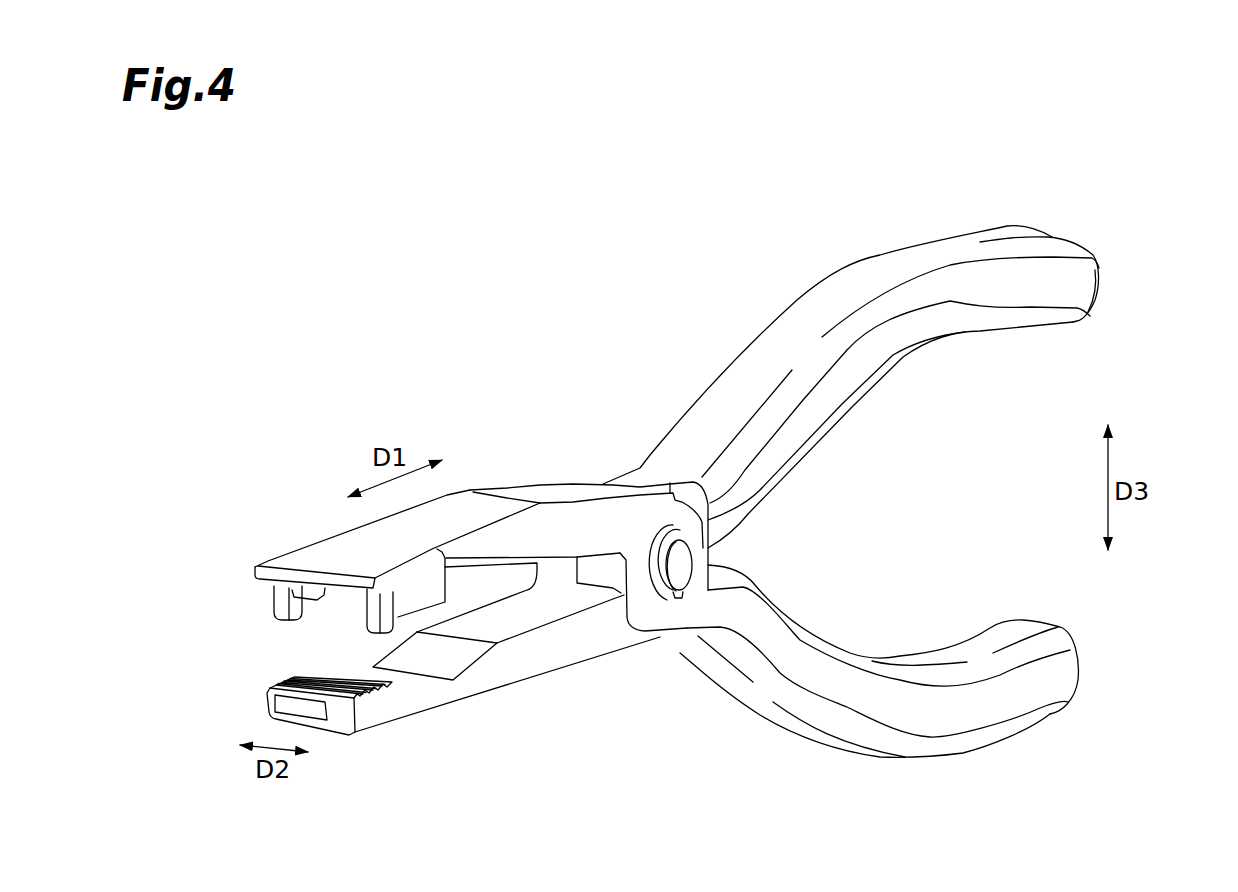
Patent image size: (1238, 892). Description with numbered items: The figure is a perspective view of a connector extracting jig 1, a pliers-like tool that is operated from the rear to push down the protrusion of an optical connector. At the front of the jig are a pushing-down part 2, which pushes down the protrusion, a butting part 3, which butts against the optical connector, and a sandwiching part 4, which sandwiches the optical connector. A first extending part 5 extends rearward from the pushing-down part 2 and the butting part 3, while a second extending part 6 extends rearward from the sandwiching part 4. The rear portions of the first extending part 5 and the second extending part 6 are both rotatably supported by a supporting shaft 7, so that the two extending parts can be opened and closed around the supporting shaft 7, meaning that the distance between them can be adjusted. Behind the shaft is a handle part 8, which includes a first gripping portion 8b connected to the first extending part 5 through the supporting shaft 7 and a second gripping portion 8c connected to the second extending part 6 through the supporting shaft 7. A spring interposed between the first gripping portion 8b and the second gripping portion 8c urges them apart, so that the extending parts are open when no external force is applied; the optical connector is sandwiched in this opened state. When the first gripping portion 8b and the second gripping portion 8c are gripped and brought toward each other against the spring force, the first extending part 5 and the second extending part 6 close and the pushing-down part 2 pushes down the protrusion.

The connector extracting jig 1 is at (988, 150).
The pushing-down part 2 is at (313, 604).
The butting part 3 is at (275, 606).
The sandwiching part 4 is at (340, 716).
The first extending part 5 is at (568, 522).
The second extending part 6 is at (537, 667).
The supporting shaft 7 is at (683, 572).
The handle part 8 is at (1052, 260).
The first gripping portion 8b is at (1062, 677).
The second gripping portion 8c is at (1088, 291).